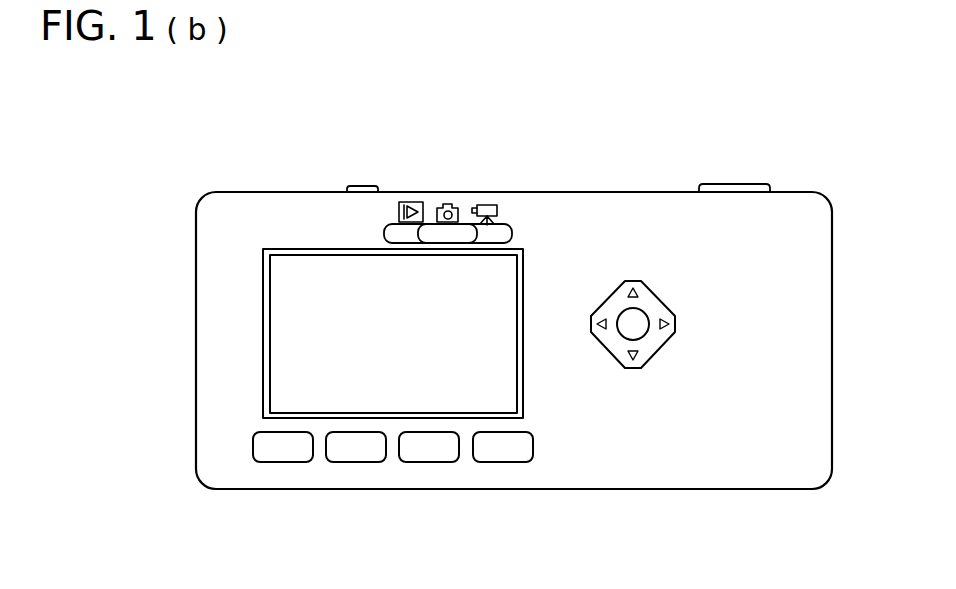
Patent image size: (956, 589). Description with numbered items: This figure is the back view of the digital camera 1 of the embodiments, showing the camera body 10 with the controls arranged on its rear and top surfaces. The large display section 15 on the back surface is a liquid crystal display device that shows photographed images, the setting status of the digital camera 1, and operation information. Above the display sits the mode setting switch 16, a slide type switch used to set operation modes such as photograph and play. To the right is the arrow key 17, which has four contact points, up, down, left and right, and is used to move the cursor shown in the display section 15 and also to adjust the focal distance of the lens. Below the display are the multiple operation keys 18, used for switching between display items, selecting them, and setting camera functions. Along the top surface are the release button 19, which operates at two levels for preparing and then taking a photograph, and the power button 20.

The digital camera 1 is at (175, 176).
The camera body 10 is at (641, 489).
The display section 15 is at (263, 325).
The mode setting switch 16 is at (480, 233).
The arrow key 17 is at (650, 303).
The operation keys 18 is at (356, 455).
The release button 19 is at (736, 184).
The power button 20 is at (365, 186).